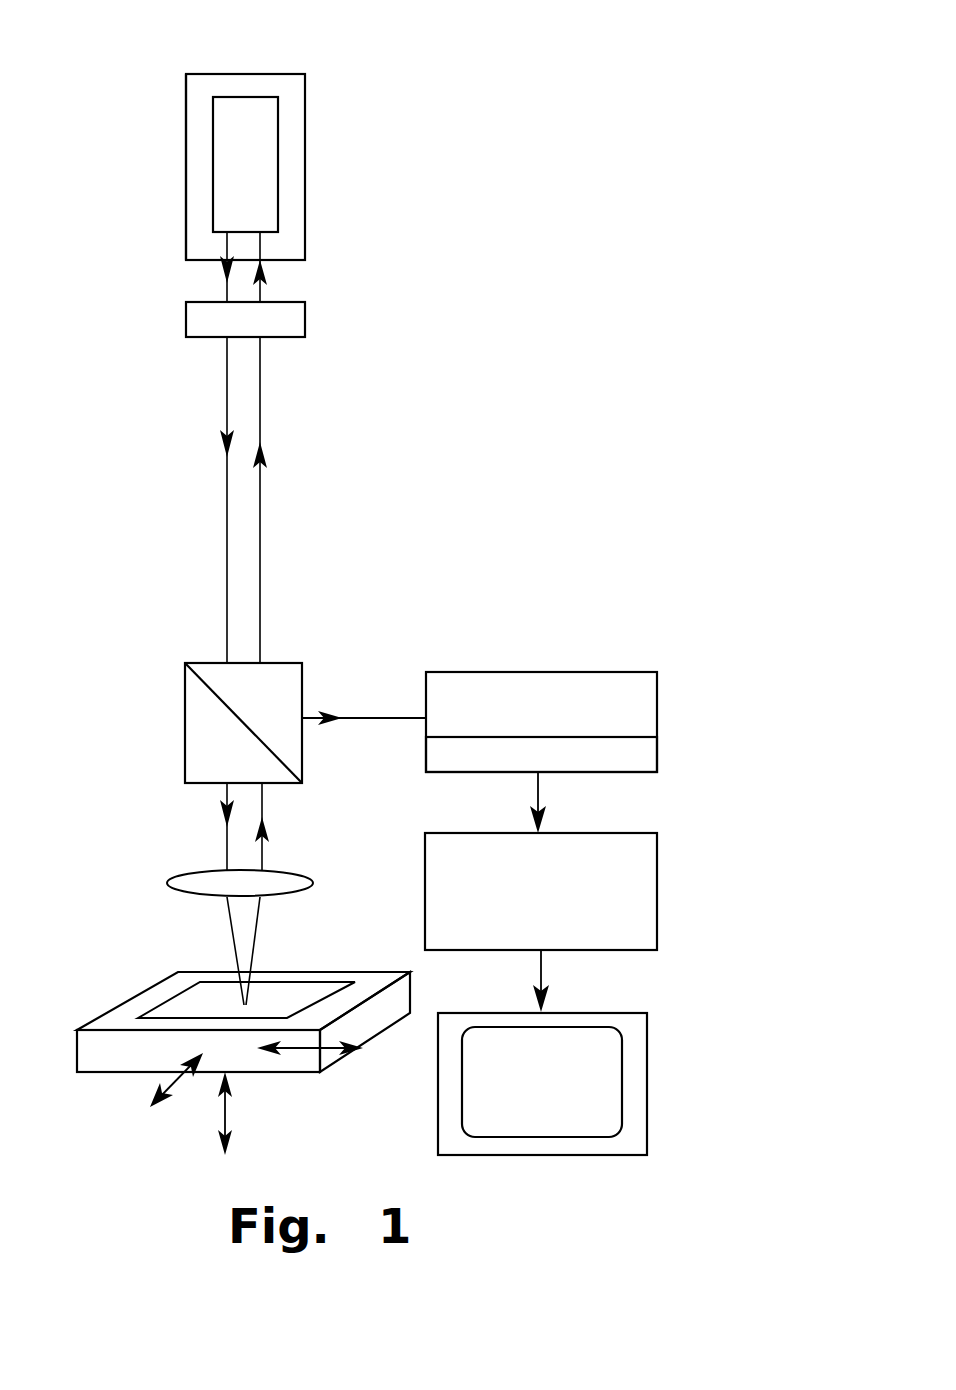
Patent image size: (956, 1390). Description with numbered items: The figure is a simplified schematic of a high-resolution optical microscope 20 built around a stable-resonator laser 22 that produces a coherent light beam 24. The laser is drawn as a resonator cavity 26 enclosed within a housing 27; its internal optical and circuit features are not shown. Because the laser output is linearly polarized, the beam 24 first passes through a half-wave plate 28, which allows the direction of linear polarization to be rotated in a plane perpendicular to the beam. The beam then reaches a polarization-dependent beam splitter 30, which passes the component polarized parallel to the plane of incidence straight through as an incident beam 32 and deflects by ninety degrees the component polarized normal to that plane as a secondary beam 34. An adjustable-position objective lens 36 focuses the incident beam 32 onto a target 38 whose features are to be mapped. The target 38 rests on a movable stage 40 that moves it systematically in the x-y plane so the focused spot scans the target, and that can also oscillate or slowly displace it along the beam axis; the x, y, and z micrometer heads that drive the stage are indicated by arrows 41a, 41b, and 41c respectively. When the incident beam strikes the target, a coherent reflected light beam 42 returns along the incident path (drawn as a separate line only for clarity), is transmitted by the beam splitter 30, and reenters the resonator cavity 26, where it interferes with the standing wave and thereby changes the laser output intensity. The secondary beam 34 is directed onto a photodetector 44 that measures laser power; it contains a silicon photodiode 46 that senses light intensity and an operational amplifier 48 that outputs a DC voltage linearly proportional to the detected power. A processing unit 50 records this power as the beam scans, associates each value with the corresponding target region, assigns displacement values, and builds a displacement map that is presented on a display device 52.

The high-resolution optical microscope 20 is at (315, 622).
The stable-resonator laser 22 is at (238, 72).
The coherent light beam 24 is at (227, 503).
The resonator cavity 26 is at (280, 107).
The housing 27 is at (186, 197).
The half-wave plate 28 is at (297, 338).
The polarization-dependent beam splitter 30 is at (305, 762).
The incident beam 32 is at (223, 832).
The secondary beam 34 is at (395, 715).
The adjustable-position objective lens 36 is at (313, 883).
The target 38 is at (277, 990).
The movable stage 40 is at (127, 1057).
The x micrometer head 41a is at (313, 1047).
The y micrometer head 41b is at (175, 1087).
The z micrometer head 41c is at (227, 1112).
The coherent reflected light beam 42 is at (263, 802).
The photodetector 44 is at (537, 672).
The silicon photodiode 46 is at (635, 737).
The operational amplifier 48 is at (638, 758).
The processing unit 50 is at (547, 904).
The display device 52 is at (560, 1157).